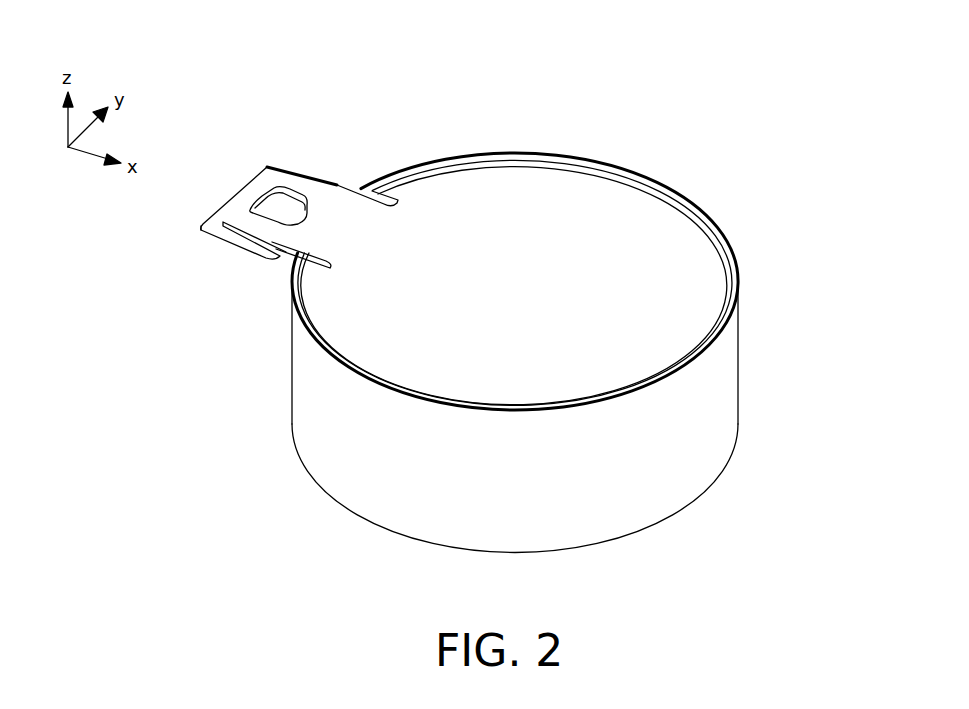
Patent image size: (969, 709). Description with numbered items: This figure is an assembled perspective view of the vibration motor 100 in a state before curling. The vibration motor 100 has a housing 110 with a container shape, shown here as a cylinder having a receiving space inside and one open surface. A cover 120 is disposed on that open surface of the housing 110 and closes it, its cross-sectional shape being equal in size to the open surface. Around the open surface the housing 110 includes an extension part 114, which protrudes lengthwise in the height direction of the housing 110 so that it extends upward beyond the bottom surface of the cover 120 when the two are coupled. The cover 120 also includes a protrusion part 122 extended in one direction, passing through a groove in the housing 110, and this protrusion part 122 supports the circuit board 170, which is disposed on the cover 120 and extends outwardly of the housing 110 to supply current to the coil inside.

The vibration motor 100 is at (523, 125).
The housing 110 is at (728, 382).
The extension part 114 is at (734, 241).
The cover 120 is at (627, 225).
The protrusion part 122 is at (333, 210).
The circuit board 170 is at (268, 166).